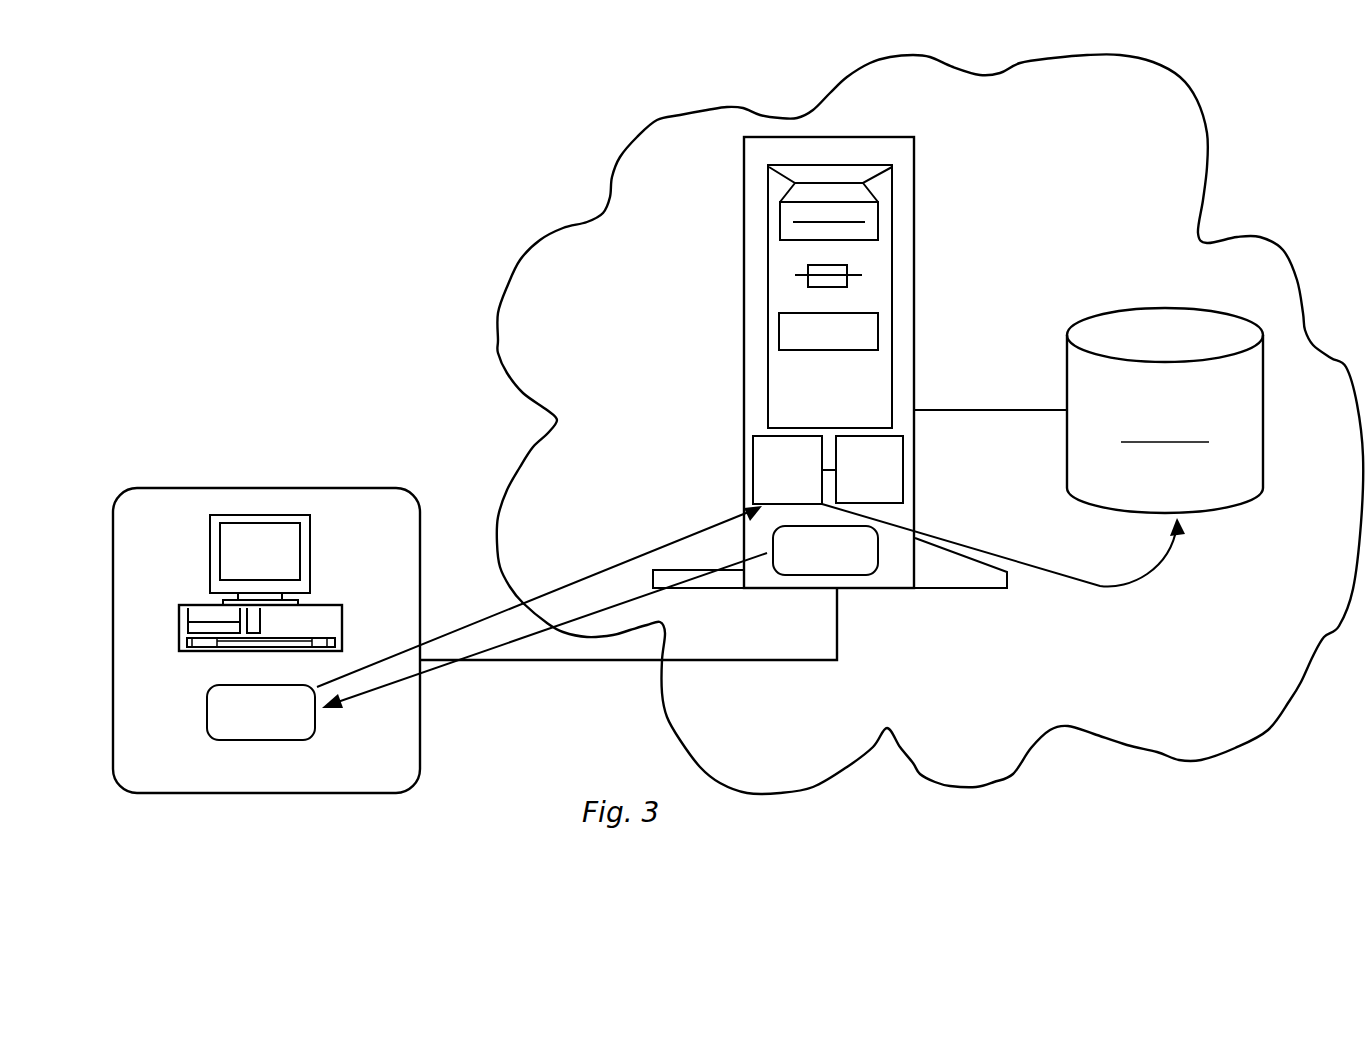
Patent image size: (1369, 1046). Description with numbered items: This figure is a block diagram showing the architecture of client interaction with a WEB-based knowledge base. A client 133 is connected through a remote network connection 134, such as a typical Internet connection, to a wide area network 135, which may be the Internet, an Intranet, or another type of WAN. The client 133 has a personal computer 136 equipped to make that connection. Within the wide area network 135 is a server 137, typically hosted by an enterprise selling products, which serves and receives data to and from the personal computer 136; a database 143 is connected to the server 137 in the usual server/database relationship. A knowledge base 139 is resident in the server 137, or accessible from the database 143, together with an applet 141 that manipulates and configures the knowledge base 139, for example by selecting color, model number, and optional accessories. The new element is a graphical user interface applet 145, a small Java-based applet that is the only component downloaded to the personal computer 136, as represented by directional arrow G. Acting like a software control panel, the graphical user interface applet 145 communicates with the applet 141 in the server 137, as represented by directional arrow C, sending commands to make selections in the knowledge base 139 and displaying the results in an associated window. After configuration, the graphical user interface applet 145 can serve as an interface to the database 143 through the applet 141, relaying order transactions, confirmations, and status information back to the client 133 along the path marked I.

The client 133 is at (307, 488).
The remote network connection 134 is at (815, 662).
The wide area network 135 is at (1218, 213).
The personal computer 136 is at (210, 578).
The server 137 is at (744, 333).
The knowledge base 139 is at (903, 483).
The applet 141 is at (753, 477).
The database 143 is at (1170, 306).
The graphical user interface applet 145 is at (207, 725).
The directional arrow C is at (645, 556).
The directional arrow G is at (428, 662).
The information flow from application to database I is at (1128, 590).